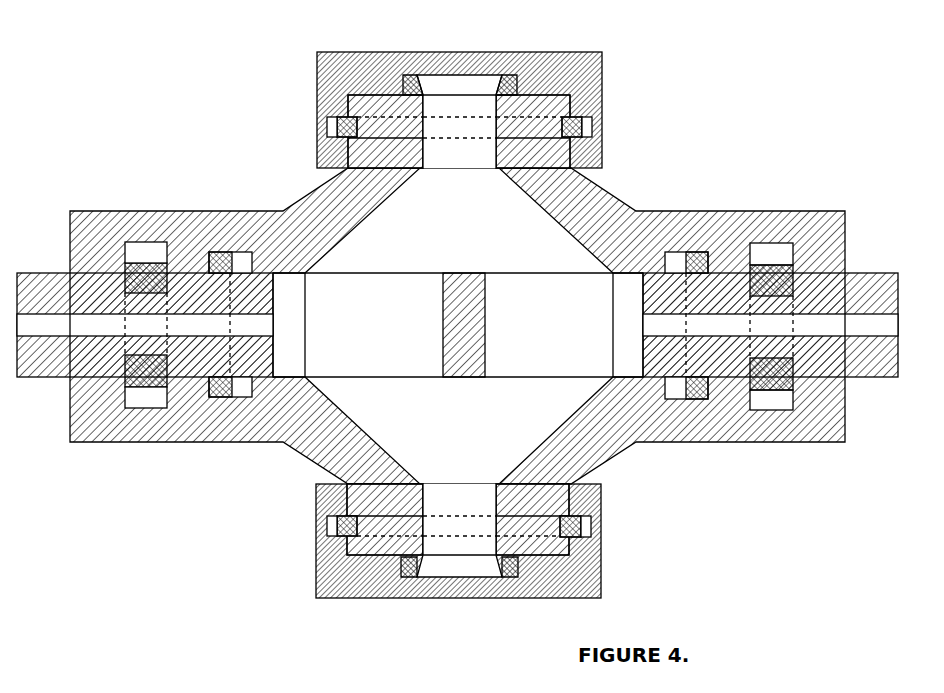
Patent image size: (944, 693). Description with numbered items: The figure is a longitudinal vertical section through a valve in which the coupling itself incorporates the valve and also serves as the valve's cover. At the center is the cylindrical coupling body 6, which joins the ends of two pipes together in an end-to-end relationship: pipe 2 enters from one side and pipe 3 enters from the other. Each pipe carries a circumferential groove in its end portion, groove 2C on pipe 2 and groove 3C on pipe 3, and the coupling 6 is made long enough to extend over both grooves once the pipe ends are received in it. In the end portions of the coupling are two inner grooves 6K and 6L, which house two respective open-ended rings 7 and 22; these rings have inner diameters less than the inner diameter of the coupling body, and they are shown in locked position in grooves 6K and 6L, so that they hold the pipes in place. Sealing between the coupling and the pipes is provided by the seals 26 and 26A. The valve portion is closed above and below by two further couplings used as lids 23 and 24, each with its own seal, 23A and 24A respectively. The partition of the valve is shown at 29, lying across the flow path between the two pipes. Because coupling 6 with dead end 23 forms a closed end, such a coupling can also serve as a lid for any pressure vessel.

The pipe 2 is at (58, 272).
The circumferential groove 2C is at (147, 293).
The pipe 3 is at (880, 380).
The circumferential groove 3C is at (778, 287).
The cylindrical coupling body 6 is at (318, 98).
The inner groove 6K is at (593, 126).
The inner groove 6L is at (767, 248).
The open-ended ring 7 is at (145, 262).
The open-ended ring 22 is at (778, 375).
The lid 23 is at (473, 52).
The seal 23A is at (417, 80).
The lid 24 is at (442, 590).
The seal 24A is at (423, 555).
The seal 26 is at (232, 262).
The seal 26A is at (697, 266).
The partition 29 is at (480, 378).